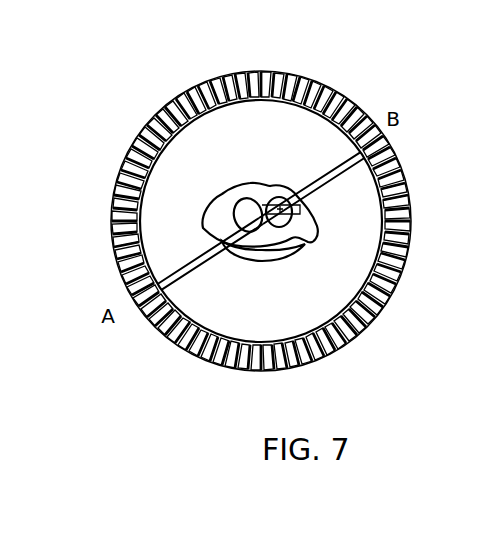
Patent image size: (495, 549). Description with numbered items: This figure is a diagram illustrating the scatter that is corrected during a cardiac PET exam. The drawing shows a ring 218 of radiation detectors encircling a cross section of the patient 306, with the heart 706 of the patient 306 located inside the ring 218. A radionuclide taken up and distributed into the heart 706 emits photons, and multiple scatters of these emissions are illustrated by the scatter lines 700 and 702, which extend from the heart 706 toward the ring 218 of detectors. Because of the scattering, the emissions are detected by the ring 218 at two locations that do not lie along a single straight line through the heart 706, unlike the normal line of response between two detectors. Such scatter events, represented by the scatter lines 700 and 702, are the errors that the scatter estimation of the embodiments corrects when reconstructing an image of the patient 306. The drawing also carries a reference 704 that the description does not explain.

The ring of detectors 218 is at (252, 71).
The scatter line 700 is at (336, 165).
The scatter line 702 is at (190, 268).
The object lower portion 704 is at (293, 247).
The heart 706 is at (272, 190).
The patient 306 is at (317, 240).